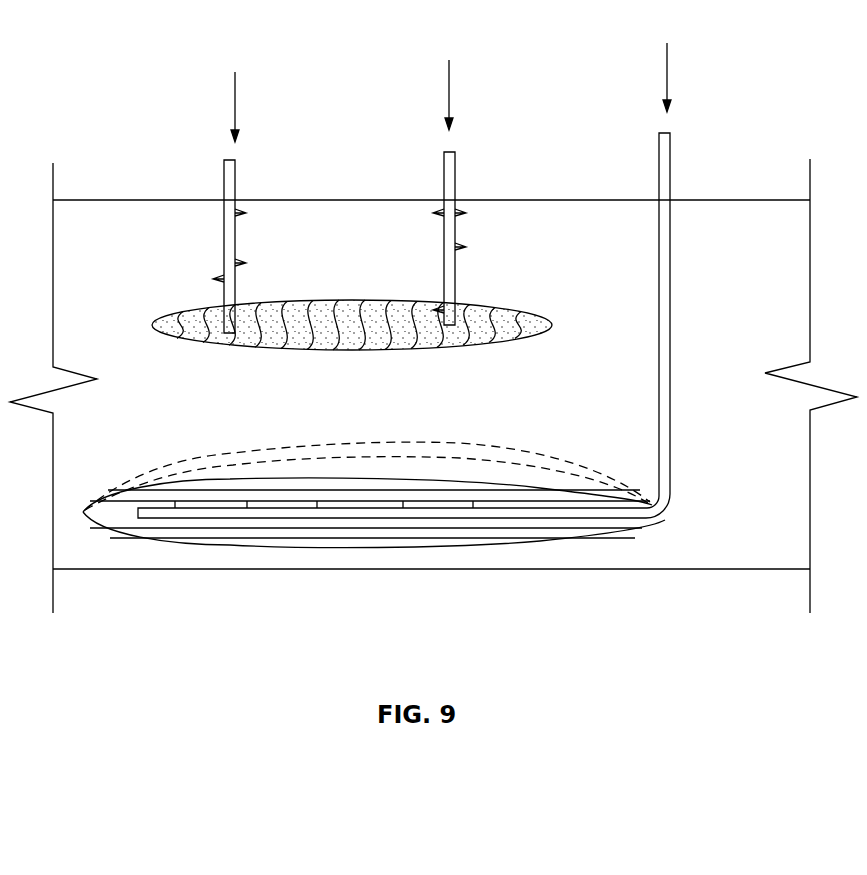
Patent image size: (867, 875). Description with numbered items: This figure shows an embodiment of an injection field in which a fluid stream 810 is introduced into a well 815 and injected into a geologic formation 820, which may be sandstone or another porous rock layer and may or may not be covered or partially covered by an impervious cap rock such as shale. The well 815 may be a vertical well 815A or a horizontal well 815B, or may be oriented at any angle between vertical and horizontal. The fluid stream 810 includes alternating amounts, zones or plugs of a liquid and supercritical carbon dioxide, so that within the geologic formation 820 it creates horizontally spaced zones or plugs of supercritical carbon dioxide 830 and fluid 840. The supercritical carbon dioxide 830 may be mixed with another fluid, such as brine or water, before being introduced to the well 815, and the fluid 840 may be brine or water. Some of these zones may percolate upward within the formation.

The fluid stream 810 is at (449, 80).
The well 815 is at (679, 154).
The vertical well 815A is at (444, 170).
The horizontal well 815B is at (679, 193).
The geologic formation 820 is at (329, 401).
The zone of SC-CO2 830 is at (303, 303).
The zone of fluid 840 is at (332, 304).